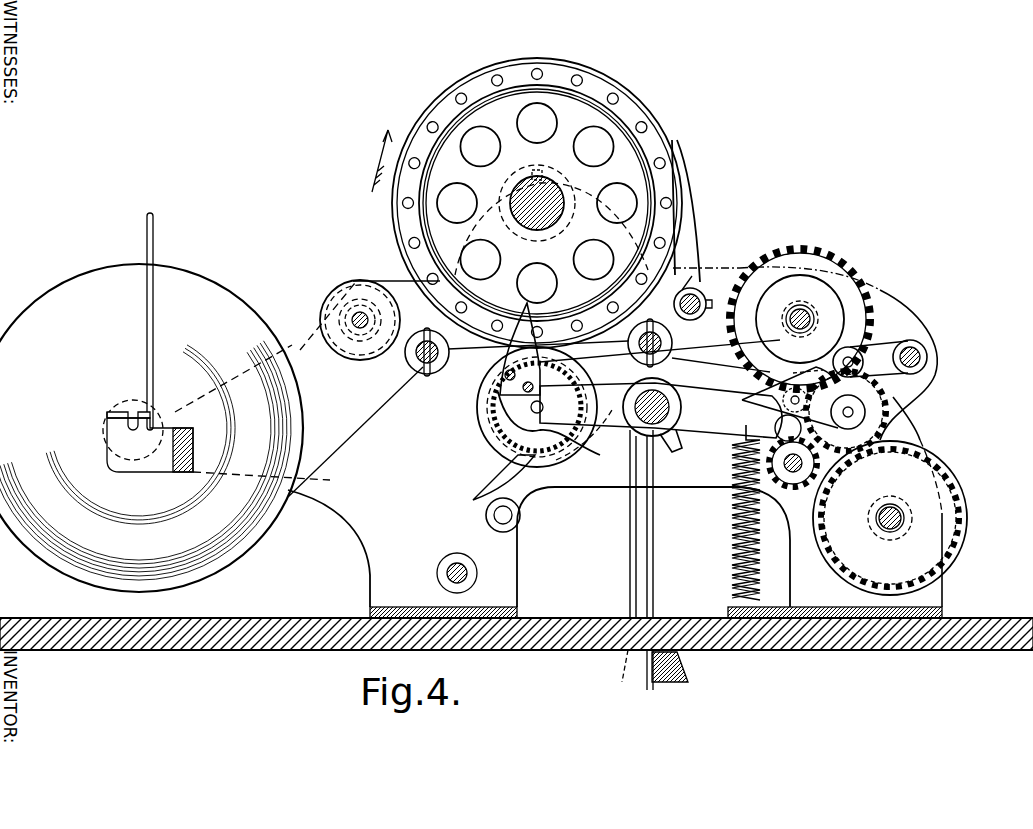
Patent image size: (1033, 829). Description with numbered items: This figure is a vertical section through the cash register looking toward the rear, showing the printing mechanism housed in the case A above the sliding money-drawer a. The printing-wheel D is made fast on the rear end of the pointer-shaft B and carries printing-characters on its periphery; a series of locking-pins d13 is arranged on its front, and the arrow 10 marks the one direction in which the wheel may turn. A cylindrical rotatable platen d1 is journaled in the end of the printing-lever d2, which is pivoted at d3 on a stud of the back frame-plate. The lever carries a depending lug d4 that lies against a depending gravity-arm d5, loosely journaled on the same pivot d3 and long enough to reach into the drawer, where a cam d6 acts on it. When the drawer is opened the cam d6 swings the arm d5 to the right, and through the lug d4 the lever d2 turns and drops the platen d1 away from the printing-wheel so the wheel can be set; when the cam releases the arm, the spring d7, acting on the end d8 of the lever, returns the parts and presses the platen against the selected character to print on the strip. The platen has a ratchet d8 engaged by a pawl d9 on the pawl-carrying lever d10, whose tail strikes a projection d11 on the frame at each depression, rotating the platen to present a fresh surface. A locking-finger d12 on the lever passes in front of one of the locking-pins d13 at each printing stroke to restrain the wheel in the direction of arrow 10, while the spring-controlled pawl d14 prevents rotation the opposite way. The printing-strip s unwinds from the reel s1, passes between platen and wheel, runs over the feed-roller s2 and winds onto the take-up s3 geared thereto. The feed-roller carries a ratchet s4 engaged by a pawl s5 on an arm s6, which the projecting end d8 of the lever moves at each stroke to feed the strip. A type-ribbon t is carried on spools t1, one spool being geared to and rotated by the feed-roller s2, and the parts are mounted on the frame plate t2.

The case A is at (255, 650).
The money-drawer a is at (582, 62).
The pointer-shaft B is at (548, 198).
The printing-wheel D is at (607, 210).
The arrow 10 is at (365, 161).
The platen d1 is at (490, 440).
The printing-lever d2 is at (606, 440).
The pivot d3 is at (668, 396).
The depending lug d4 is at (680, 446).
The depending gravity-arm d5 is at (630, 520).
The cam d6 is at (690, 672).
The spring d7 is at (733, 535).
The ratchet d8 is at (497, 390).
The pawl d9 is at (560, 385).
The pawl-carrying lever d10 is at (500, 480).
The projection d11 is at (486, 515).
The locking-finger d12 is at (447, 362).
The locking-pins d13 is at (457, 97).
The spring-controlled pawl d14 is at (698, 250).
The printing-strip s is at (360, 432).
The reel s1 is at (151, 402).
The feed-roller s2 is at (880, 408).
The take-up s3 is at (968, 520).
The ratchet s4 is at (880, 425).
The pawl s5 is at (790, 386).
The arm s6 is at (928, 357).
The type-ribbon t is at (393, 362).
The spool t1 is at (337, 297).
The plate t2 is at (862, 306).